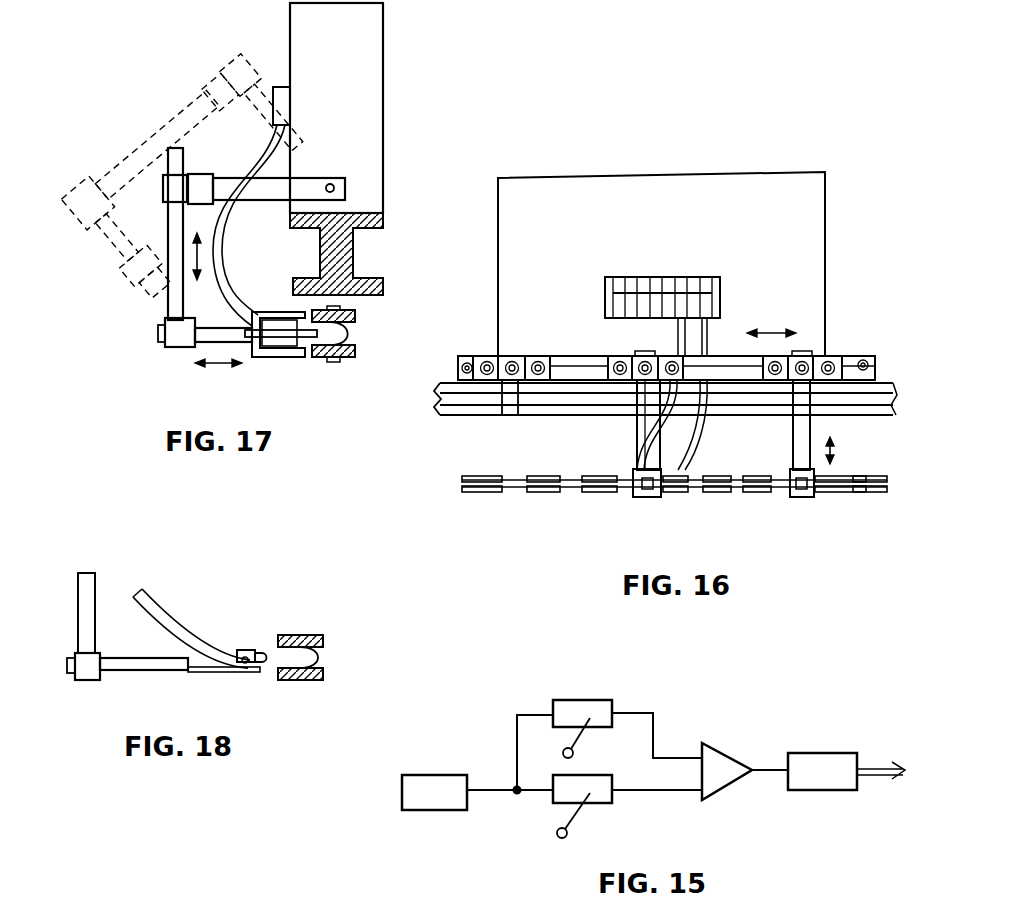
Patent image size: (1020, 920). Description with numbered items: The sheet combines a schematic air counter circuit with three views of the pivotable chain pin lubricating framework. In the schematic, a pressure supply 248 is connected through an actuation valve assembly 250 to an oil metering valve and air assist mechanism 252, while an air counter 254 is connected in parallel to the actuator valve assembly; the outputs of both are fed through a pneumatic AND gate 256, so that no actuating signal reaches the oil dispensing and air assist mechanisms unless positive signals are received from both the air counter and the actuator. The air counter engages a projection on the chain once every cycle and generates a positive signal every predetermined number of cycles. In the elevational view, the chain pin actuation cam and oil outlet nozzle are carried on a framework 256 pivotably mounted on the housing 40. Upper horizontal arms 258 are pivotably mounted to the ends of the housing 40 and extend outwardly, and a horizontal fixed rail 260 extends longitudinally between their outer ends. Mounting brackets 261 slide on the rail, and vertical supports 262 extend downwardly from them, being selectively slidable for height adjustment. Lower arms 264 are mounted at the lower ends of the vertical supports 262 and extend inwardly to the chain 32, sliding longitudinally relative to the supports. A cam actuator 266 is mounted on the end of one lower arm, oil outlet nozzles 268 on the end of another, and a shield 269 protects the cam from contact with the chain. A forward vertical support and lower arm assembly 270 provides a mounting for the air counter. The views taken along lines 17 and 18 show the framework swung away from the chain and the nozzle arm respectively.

In FIG. 17, the housing 40 is at (367, 108).
In FIG. 17, the upper horizontal arms 258 is at (312, 186).
In FIG. 17, the horizontal fixed rail 260 is at (205, 178).
In FIG. 16, the horizontal fixed rail 260 is at (577, 358).
In FIG. 17, the mounting brackets 261 is at (170, 183).
In FIG. 16, the mounting brackets 261 is at (527, 355).
In FIG. 17, the vertical supports 262 is at (167, 313).
In FIG. 16, the vertical supports 262 is at (637, 424).
In FIG. 18, the vertical supports 262 is at (80, 606).
In FIG. 17, the lower arms 264 is at (210, 335).
In FIG. 18, the lower arms 264 is at (128, 672).
In FIG. 17, the cam actuator 266 is at (278, 328).
In FIG. 16, the cam actuator 266 is at (797, 498).
In FIG. 16, the oil outlet nozzles 268 is at (638, 497).
In FIG. 18, the oil outlet nozzles 268 is at (247, 650).
In FIG. 17, the shield 269 is at (287, 352).
In FIG. 16, the forward vertical support and lower arm assembly 270 is at (520, 414).
In FIG. 17, the chain 32 is at (359, 347).
In FIG. 16, the chain 32 is at (513, 491).
In FIG. 18, the chain 32 is at (326, 658).
In FIG. 17, the pneumatic AND gate / framework 256 is at (140, 348).
In FIG. 15, the pneumatic AND gate / framework 256 is at (735, 758).
In FIG. 15, the pressure supply 248 is at (432, 773).
In FIG. 15, the actuation valve assembly 250 is at (597, 805).
In FIG. 15, the air counter 254 is at (600, 700).
In FIG. 15, the oil metering valve and air assist mechanism 252 is at (823, 753).
In FIG. 16, the section line 17- 17 is at (893, 225).
In FIG. 16, the section line 18- 18 is at (680, 467).